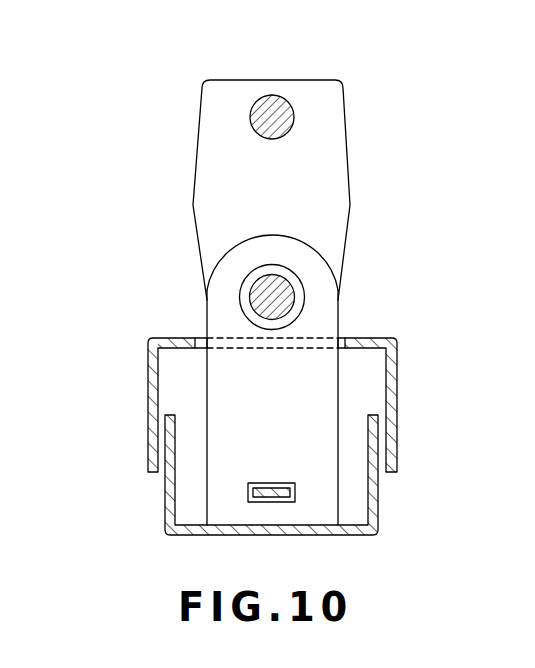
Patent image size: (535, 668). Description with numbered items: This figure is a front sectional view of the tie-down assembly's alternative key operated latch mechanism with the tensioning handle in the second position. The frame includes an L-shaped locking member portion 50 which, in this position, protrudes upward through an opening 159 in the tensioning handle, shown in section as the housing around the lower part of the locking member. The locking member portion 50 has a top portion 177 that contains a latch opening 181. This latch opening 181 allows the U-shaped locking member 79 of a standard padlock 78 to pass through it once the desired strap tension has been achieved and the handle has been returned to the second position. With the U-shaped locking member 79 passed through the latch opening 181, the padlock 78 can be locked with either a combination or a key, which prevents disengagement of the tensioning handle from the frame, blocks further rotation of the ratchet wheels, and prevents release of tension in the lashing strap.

The L-shaped locking member portion 50 is at (207, 390).
The standard padlock 78 is at (200, 128).
The U-shaped locking member 79 is at (292, 103).
The opening 159 is at (343, 333).
The top portion 177 is at (311, 243).
The latch opening 181 is at (305, 295).